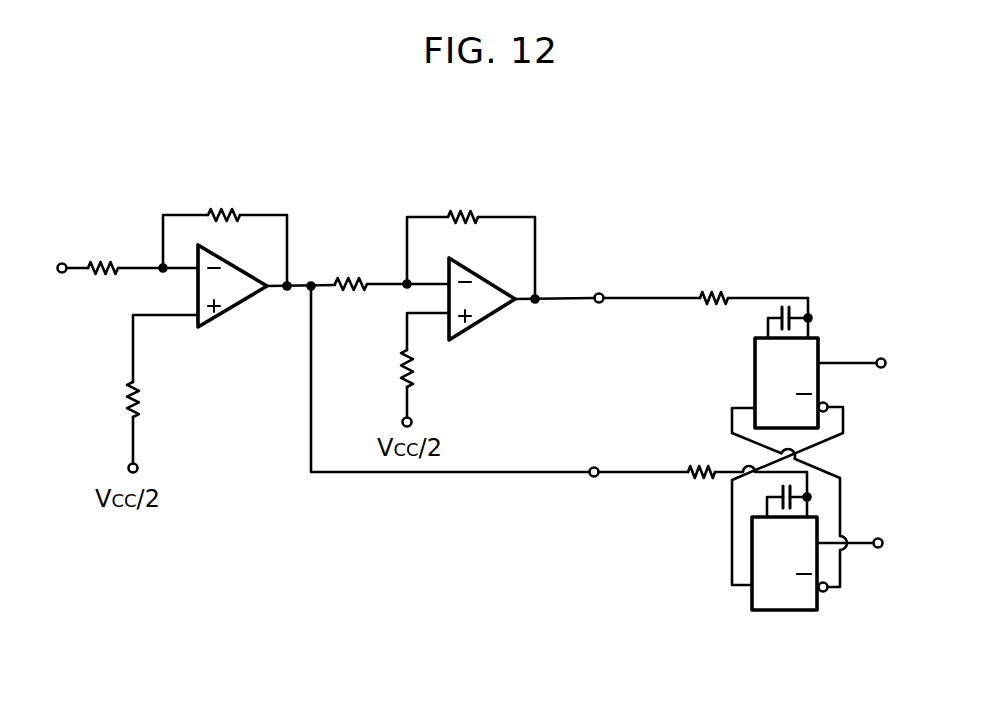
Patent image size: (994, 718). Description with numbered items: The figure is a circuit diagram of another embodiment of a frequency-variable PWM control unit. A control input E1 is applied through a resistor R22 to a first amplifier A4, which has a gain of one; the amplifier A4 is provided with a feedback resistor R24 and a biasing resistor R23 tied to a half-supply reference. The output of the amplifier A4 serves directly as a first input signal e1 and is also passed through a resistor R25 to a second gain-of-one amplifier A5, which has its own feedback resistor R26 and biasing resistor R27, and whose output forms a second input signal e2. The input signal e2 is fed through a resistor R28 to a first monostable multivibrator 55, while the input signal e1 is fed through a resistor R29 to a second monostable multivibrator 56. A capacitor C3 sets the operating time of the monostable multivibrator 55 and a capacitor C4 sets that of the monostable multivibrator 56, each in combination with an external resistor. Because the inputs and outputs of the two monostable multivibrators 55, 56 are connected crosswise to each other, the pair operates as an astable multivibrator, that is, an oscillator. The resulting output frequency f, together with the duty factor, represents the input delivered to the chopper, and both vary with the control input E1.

The resistor R22 is at (99, 264).
The resistor R23 is at (143, 401).
The resistor R24 is at (232, 209).
The resistor R25 is at (347, 279).
The resistor R26 is at (461, 211).
The resistor R27 is at (431, 368).
The resistor R28 is at (717, 284).
The resistor R29 is at (708, 459).
The amplifier A4 is at (233, 296).
The amplifier A5 is at (490, 306).
The capacitor C3 is at (770, 320).
The capacitor C4 is at (774, 497).
The monostable multivibrator 55 is at (762, 376).
The monostable multivibrator 56 is at (760, 553).
The control input E1 is at (64, 252).
The input signal e1 is at (595, 454).
The input signal e2 is at (595, 282).
The output frequency f is at (892, 364).